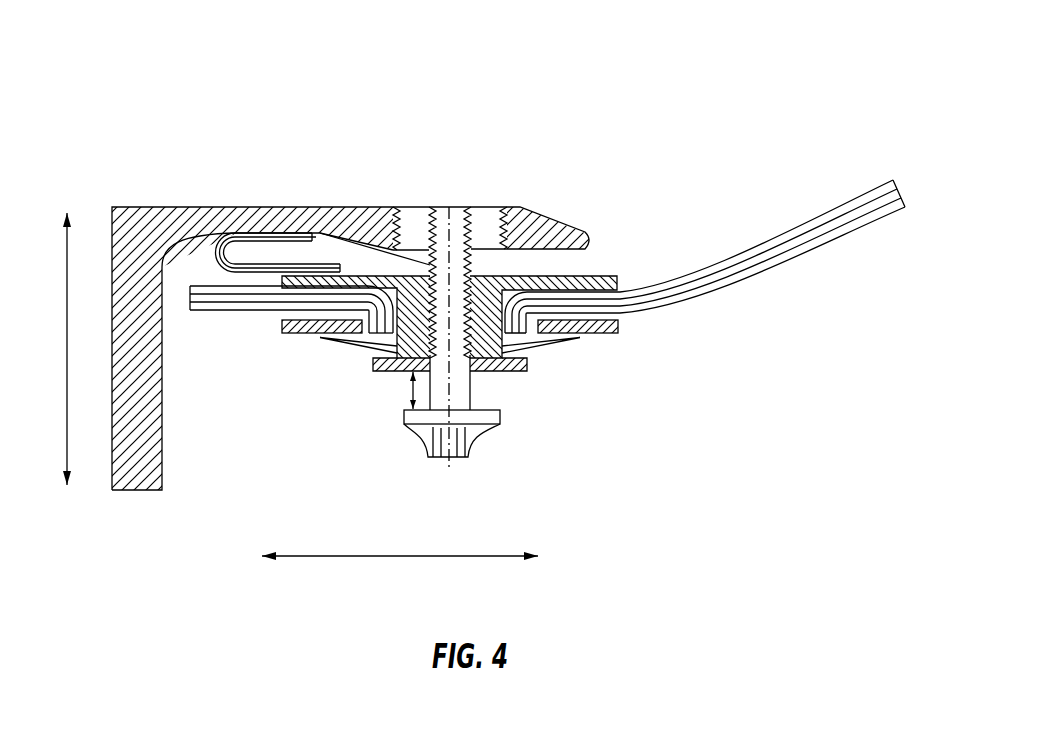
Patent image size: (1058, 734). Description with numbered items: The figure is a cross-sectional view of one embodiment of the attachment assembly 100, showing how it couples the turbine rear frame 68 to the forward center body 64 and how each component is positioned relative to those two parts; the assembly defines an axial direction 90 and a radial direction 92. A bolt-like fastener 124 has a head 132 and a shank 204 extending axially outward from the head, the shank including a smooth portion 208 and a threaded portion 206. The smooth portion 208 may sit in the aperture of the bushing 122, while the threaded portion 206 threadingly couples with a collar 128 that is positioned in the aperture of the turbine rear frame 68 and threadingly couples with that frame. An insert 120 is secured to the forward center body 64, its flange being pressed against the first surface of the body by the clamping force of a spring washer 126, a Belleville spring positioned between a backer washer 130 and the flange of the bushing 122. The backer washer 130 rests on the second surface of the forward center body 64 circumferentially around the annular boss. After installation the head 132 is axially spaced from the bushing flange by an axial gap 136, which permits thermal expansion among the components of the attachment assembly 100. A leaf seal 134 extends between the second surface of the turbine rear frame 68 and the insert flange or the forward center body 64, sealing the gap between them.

The attachment assembly 100 is at (282, 66).
The turbine rear frame 68 is at (110, 238).
The leaf seal 134 is at (233, 232).
The shank 204 is at (387, 250).
The threaded portion 206 is at (441, 207).
The fastener 124 is at (457, 207).
The collar 128 is at (491, 207).
The insert 120 is at (605, 276).
The forward center body 64 is at (746, 247).
The backer washer 130 is at (612, 333).
The spring washer 126 is at (560, 352).
The bushing 122 is at (522, 372).
The axial gap 136 is at (408, 392).
The smooth portion 208 is at (460, 395).
The head 132 is at (452, 460).
The axial direction 90 is at (64, 342).
The radial direction 92 is at (413, 559).